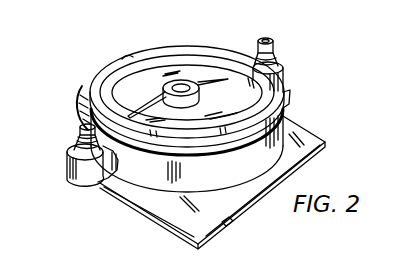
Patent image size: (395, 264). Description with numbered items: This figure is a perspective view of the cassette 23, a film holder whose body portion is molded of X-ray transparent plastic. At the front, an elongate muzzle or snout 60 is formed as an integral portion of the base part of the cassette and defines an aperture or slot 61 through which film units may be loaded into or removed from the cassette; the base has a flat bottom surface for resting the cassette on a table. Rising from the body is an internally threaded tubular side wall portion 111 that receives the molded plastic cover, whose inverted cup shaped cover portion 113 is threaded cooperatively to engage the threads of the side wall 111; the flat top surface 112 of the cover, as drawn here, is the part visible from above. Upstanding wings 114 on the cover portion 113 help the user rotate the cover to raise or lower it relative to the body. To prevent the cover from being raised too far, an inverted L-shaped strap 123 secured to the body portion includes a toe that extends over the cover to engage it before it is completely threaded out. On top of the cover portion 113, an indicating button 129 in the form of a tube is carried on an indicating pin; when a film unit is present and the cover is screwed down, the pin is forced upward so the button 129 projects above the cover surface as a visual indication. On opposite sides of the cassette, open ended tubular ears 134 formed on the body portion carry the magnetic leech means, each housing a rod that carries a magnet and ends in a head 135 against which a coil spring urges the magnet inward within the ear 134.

The cassette 23 is at (311, 124).
The snout 60 is at (193, 213).
The slot 61 is at (227, 221).
The side wall portion 111 is at (82, 107).
The disc 112 is at (150, 75).
The cover portion 113 is at (163, 49).
The wings 114 is at (148, 107).
The strap 123 is at (123, 57).
The indicating button 129 is at (272, 99).
The tubular ear 134 is at (63, 168).
The head 135 is at (265, 38).